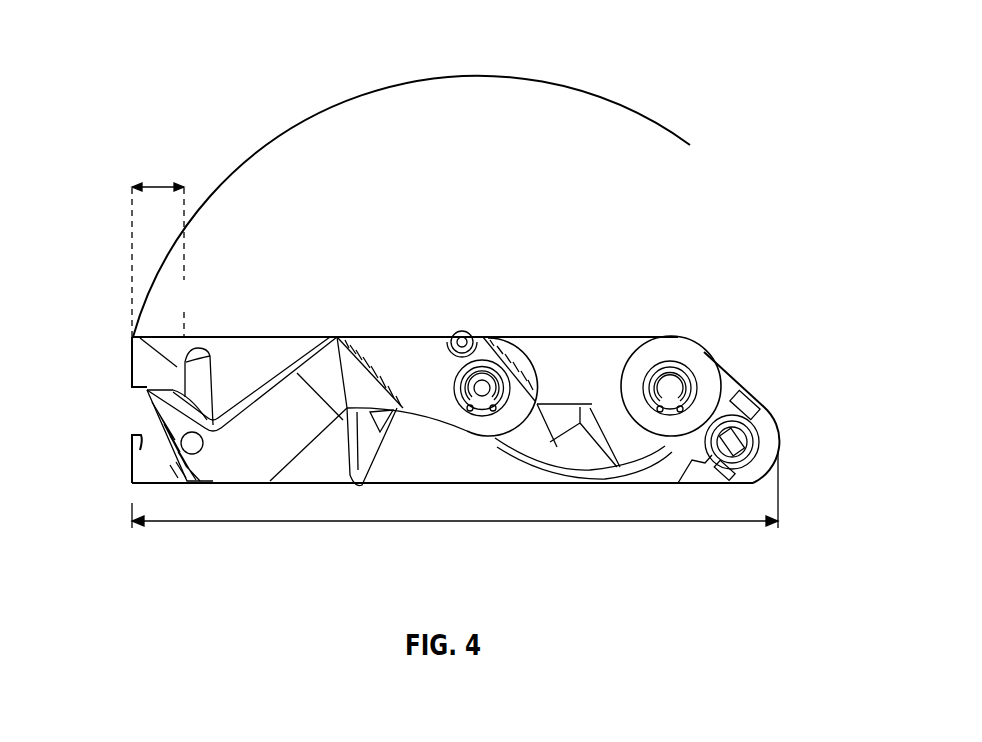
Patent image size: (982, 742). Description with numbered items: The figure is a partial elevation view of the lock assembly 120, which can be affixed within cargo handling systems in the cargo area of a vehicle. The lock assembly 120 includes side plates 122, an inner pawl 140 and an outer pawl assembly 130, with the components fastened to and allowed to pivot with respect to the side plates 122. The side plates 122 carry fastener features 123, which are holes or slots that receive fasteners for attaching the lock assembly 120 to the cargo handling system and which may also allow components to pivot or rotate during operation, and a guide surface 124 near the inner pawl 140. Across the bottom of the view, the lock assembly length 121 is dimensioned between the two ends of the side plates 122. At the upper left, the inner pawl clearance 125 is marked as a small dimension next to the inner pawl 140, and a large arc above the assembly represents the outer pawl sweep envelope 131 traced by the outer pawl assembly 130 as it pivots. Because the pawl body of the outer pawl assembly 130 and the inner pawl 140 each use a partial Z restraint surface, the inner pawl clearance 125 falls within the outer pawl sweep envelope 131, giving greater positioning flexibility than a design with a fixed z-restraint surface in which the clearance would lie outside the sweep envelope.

The lock assembly 120 is at (779, 44).
The lock assembly length 121 is at (453, 522).
The side plates 122 is at (585, 357).
The fastener features 123 is at (132, 452).
The guide surface 124 is at (188, 337).
The inner pawl clearance 125 is at (163, 186).
The outer pawl assembly 130 is at (394, 356).
The outer pawl sweep envelope 131 is at (253, 153).
The inner pawl 140 is at (246, 338).